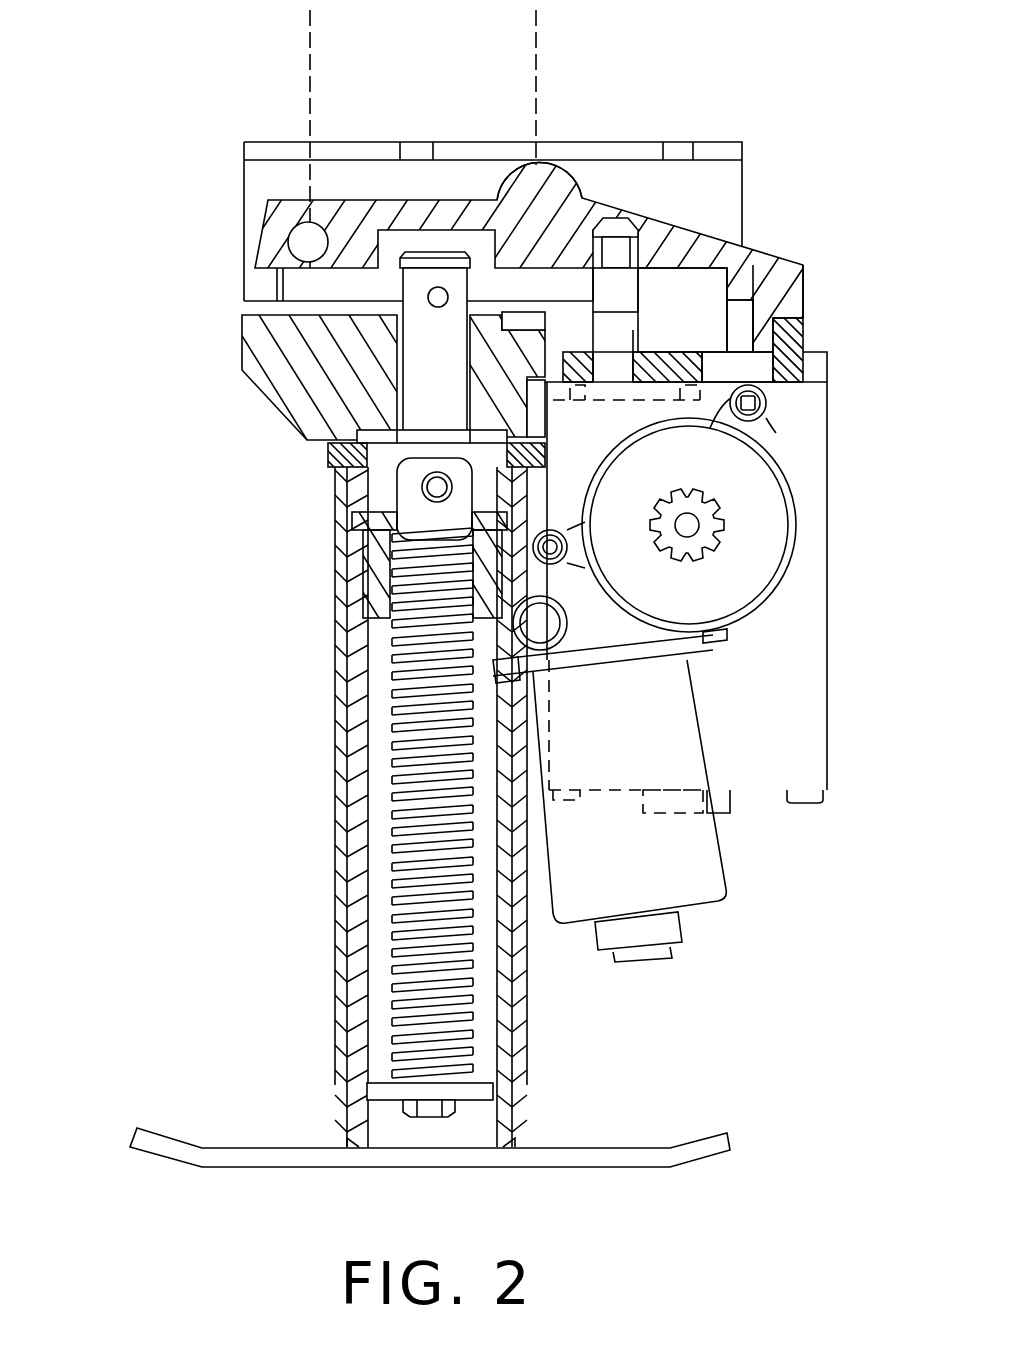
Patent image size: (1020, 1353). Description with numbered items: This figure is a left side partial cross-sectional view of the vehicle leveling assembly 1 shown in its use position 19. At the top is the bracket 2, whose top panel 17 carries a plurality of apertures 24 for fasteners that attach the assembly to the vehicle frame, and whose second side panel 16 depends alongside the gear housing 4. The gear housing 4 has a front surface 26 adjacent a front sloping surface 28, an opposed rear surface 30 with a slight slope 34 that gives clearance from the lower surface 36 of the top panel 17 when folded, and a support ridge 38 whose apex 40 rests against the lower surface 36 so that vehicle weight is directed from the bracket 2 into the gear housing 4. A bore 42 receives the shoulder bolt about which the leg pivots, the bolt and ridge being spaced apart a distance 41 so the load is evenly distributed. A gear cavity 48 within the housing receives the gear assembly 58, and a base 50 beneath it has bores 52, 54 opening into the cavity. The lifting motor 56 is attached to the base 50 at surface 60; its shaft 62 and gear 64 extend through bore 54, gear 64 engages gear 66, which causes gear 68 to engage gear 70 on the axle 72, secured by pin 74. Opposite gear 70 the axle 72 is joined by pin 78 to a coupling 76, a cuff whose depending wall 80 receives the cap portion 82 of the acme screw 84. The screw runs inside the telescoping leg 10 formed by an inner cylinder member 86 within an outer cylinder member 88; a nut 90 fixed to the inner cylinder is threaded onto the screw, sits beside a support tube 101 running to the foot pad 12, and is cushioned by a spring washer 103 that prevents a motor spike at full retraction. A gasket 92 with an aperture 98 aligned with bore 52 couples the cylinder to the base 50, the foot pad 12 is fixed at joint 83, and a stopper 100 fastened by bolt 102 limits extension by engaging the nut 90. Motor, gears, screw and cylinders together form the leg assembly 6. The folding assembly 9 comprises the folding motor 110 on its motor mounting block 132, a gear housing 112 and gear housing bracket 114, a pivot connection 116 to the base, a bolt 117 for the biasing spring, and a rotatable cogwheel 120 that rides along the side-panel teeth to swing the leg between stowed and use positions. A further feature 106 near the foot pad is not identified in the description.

The vehicle leveling assembly 1 is at (125, 550).
The bracket 2 is at (258, 135).
The gear housing 4 is at (802, 225).
The leg assembly 6 is at (900, 598).
The folding assembly 9 is at (718, 933).
The leg 10 is at (300, 918).
The foot pad 12 is at (683, 1135).
The second side panel 16 is at (730, 203).
The top panel 17 is at (345, 142).
The use position 19 is at (85, 1030).
The apertures 24 is at (400, 145).
The front surface 26 is at (805, 262).
The front sloping surface 28 is at (633, 218).
The rear surface 30 is at (330, 283).
The slight slope 34 is at (275, 215).
The lower surface 36 is at (477, 162).
The support ridge 38 is at (545, 172).
The apex 40 is at (540, 162).
The distance 41 is at (312, 17).
The bore 42 is at (305, 245).
The gear cavity 48 is at (437, 250).
The base 50 is at (790, 365).
The bore 52 is at (400, 345).
The bore 54 is at (768, 330).
The lifting motor 56 is at (830, 730).
The gear assembly 58 is at (682, 310).
The surface 60 is at (808, 385).
The shaft 62 is at (805, 343).
The gear 64 is at (757, 300).
The gear 66 is at (745, 315).
The gear 68 is at (743, 247).
The gear 70 is at (545, 290).
The axle 72 is at (418, 408).
The pin 74 is at (400, 365).
The coupling 76 is at (432, 490).
The pin 78 is at (562, 442).
The depending wall 80 is at (385, 500).
The cap portion 82 is at (418, 537).
The joint 83 is at (520, 1142).
The acme screw 84 is at (395, 965).
The inner cylinder member 86 is at (340, 1110).
The outer cylinder member 88 is at (345, 862).
The nut 90 is at (372, 600).
The gasket 92 is at (348, 450).
The aperture 98 is at (333, 445).
The stopper 100 is at (497, 1100).
The support tube 101 is at (372, 655).
The bolt 102 is at (430, 1120).
The spring washer 103 is at (360, 545).
The foot plate bottom 106 is at (250, 1170).
The folding motor 110 is at (700, 880).
The gear housing 112 is at (777, 497).
The gear housing bracket 114 is at (593, 630).
The pivot connection 116 is at (765, 415).
The bolt 117 is at (593, 552).
The rotatable cogwheel 120 is at (687, 505).
The motor mounting block 132 is at (660, 645).